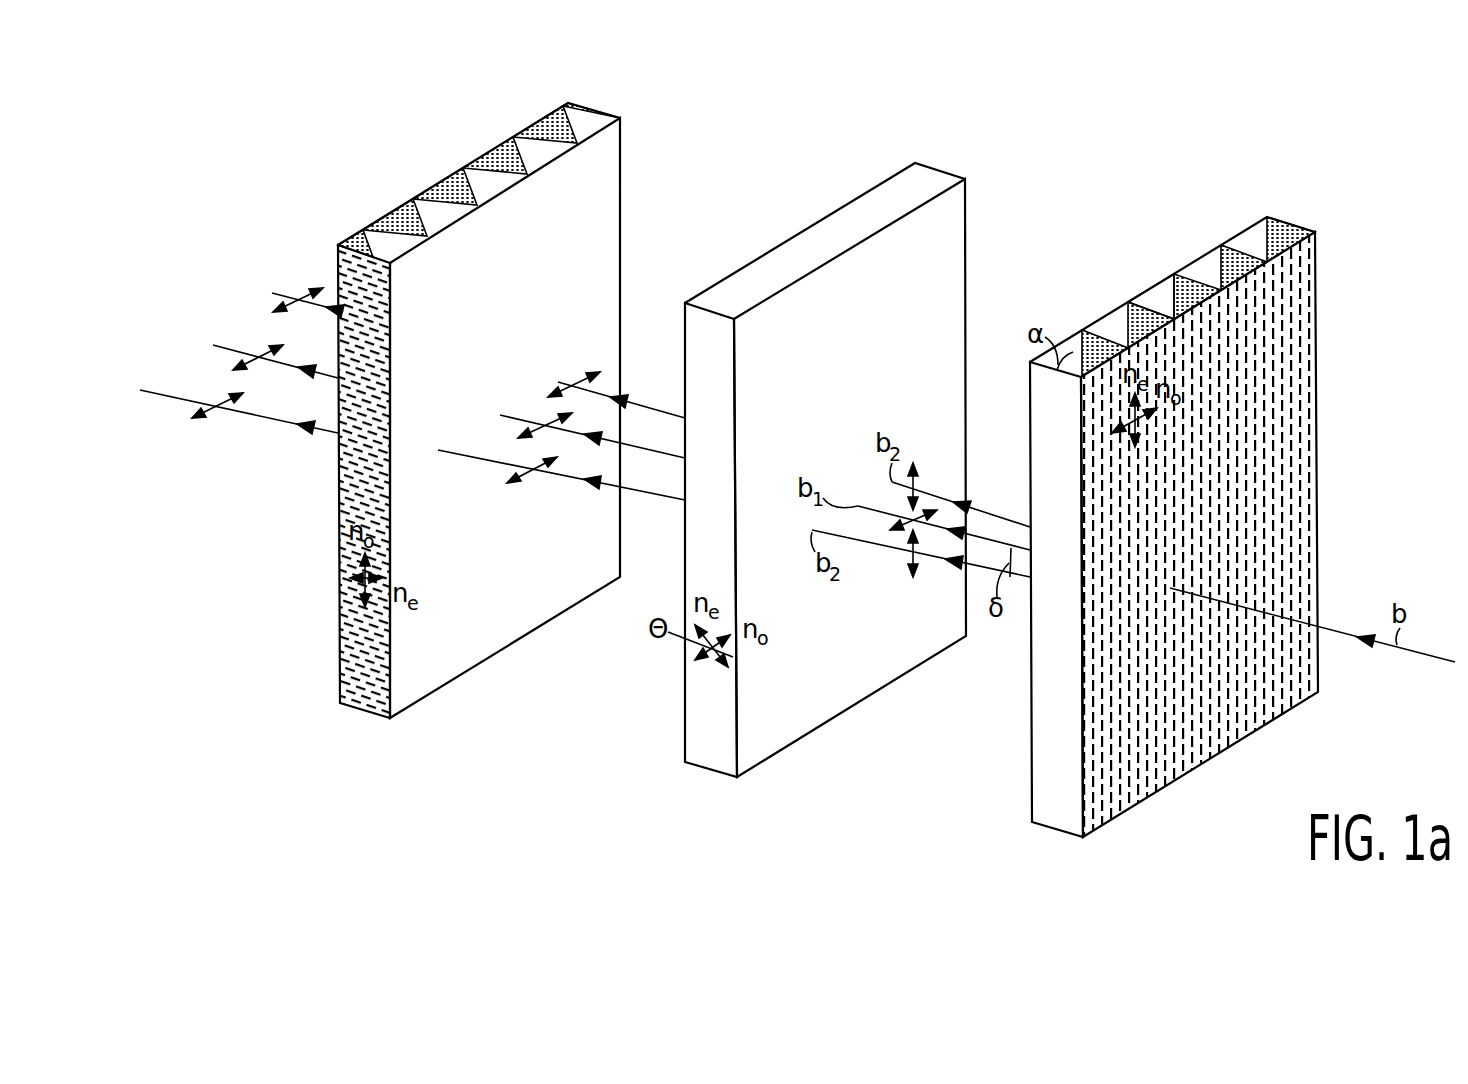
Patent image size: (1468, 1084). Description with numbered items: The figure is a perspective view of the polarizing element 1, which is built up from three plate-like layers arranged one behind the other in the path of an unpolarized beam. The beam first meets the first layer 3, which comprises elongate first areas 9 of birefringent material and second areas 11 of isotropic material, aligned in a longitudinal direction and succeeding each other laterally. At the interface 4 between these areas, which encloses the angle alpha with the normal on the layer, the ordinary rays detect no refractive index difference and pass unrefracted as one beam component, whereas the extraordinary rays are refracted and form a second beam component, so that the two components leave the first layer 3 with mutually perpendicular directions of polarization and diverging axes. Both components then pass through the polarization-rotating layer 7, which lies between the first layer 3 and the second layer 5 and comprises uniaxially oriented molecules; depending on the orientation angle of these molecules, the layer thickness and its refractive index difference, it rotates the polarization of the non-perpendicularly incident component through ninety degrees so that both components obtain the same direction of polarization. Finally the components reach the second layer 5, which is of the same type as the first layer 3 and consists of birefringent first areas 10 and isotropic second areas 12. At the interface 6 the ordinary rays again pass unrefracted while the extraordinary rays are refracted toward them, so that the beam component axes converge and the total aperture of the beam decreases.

The polarizing element 1 is at (814, 133).
The first layer 3 is at (1187, 509).
The interface 4 is at (1213, 279).
The second layer 5 is at (478, 414).
The interface 6 is at (383, 217).
The polarization-rotating layer 7 is at (858, 703).
The first areas 9 is at (1272, 232).
The first areas 10 is at (355, 237).
The second areas 11 is at (1152, 290).
The second areas 12 is at (433, 207).